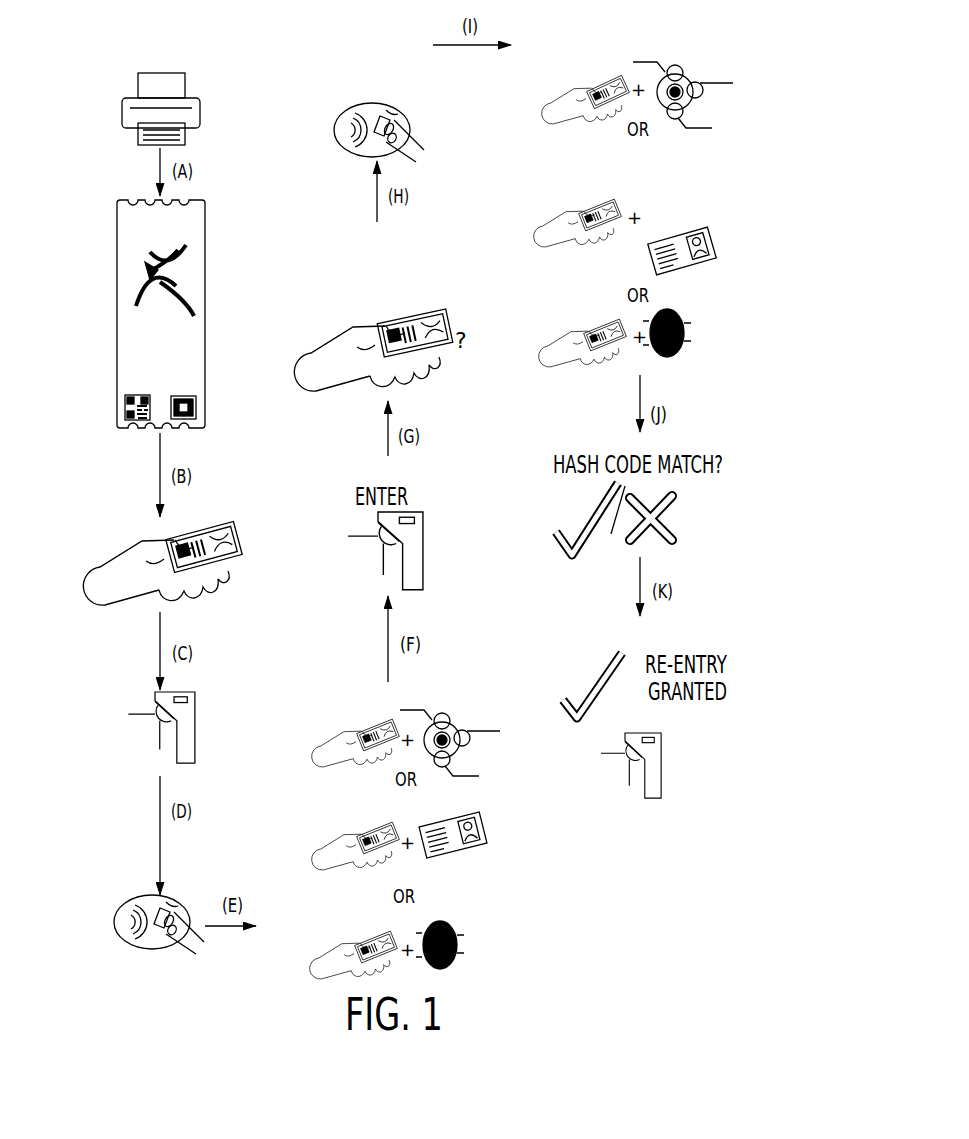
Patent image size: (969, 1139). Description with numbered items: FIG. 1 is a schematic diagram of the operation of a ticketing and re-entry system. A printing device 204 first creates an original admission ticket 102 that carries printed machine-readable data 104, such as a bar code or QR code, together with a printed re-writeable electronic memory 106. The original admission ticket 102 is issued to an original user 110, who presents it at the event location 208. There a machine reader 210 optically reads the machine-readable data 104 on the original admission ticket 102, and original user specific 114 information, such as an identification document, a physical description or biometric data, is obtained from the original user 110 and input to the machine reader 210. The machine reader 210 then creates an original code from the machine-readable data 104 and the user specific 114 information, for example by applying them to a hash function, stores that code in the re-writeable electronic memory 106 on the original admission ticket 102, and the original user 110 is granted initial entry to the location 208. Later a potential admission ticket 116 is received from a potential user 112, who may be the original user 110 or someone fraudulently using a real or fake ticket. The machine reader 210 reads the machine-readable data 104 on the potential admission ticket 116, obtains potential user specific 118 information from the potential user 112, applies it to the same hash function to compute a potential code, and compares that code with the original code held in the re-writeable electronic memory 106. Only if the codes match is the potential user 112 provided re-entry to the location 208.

The original admission ticket 102 is at (116, 270).
The printed machine-readable data 104 is at (125, 408).
The printed re-writeable electronic memory 106 is at (200, 408).
The original user 110 is at (106, 566).
The potential user 112 is at (426, 127).
The original user specific information 114 is at (466, 722).
The potential admission ticket 116 is at (396, 108).
The potential user specific information 118 is at (696, 73).
The printing device 204 is at (120, 112).
The location 208 is at (134, 702).
The machine reader 210 is at (338, 113).